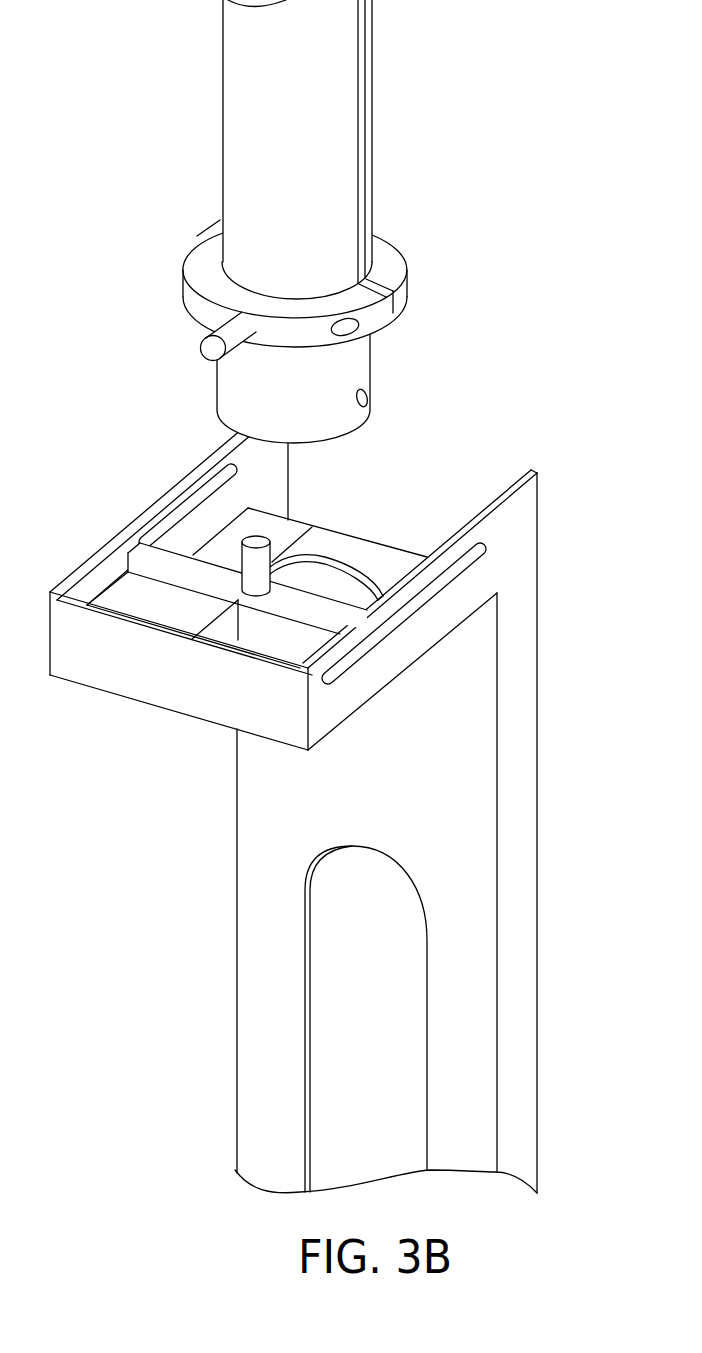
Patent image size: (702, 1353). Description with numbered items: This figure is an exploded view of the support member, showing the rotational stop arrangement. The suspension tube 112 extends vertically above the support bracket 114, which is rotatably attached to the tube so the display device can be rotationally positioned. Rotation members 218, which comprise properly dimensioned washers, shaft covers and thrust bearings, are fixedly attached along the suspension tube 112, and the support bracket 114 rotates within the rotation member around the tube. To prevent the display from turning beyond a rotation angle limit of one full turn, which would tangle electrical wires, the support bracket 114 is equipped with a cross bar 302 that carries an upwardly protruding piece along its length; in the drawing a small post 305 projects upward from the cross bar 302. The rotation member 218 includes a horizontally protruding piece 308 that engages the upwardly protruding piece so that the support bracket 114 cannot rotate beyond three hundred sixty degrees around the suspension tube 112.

The suspension tube 112 is at (373, 129).
The rotation member 218 is at (390, 278).
The horizontally protruding piece 308 is at (210, 325).
The cross bar 302 is at (167, 567).
The post 305 is at (256, 540).
The support bracket 114 is at (522, 621).